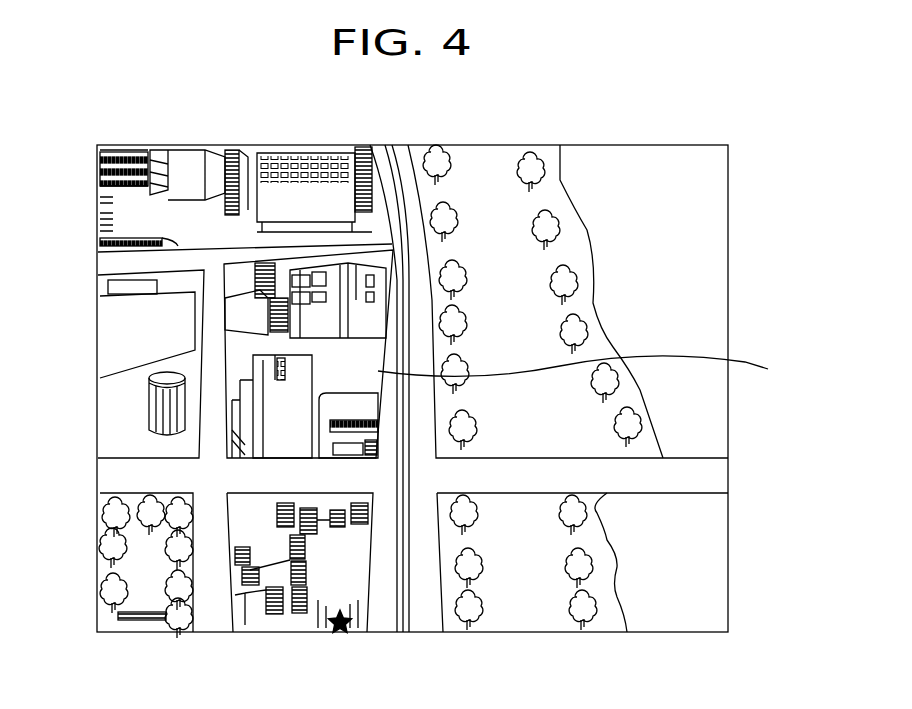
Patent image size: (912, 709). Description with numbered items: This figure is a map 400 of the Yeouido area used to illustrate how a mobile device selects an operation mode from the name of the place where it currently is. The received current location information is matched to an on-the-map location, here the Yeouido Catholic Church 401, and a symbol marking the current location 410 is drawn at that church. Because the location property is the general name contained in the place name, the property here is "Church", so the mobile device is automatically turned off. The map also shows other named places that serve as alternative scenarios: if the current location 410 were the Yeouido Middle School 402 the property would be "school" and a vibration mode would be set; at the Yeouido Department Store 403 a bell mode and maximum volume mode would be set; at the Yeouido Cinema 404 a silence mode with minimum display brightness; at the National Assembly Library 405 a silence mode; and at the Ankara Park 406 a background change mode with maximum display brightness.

The map image 400 is at (650, 144).
The Yeouido Catholic Church 401 is at (310, 602).
The Yeouido Middle School 402 is at (593, 369).
The Yeouido Department Store 403 is at (148, 157).
The Yeouido Cinema 404 is at (103, 328).
The National Assembly Library 405 is at (98, 449).
The Ankara Park 406 is at (150, 593).
The current location 410 is at (345, 633).